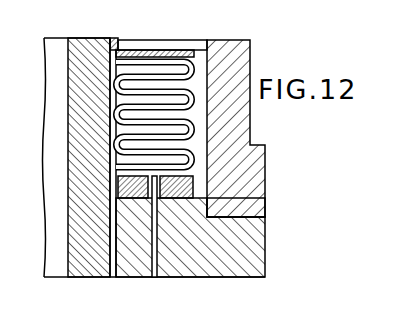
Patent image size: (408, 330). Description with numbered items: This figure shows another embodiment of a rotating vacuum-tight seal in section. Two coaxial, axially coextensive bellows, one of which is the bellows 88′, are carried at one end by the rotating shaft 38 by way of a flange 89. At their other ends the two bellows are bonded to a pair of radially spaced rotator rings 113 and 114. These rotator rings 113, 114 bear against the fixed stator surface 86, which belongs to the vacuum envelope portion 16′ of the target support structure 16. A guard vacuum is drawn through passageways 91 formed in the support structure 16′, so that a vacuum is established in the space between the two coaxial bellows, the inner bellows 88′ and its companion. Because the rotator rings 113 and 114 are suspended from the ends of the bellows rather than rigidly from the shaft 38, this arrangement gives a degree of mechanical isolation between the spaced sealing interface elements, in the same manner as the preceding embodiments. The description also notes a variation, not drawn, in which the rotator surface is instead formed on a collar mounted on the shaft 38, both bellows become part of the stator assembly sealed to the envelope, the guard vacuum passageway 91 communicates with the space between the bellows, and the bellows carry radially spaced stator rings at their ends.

The rotating shaft 38 is at (86, 262).
The flange 89 is at (190, 50).
The bellows 88′ is at (195, 69).
The target support structure 16 is at (288, 226).
The fixed stator surface 86 is at (265, 200).
The vacuum envelope portion of the target support structure 16′ is at (250, 247).
The rotator ring 113 is at (117, 184).
The rotator ring 114 is at (194, 184).
The passageways 91 is at (154, 265).